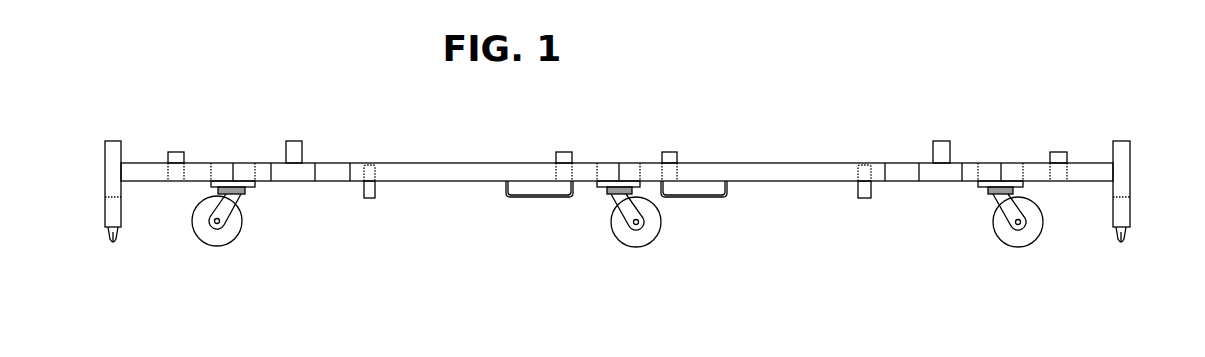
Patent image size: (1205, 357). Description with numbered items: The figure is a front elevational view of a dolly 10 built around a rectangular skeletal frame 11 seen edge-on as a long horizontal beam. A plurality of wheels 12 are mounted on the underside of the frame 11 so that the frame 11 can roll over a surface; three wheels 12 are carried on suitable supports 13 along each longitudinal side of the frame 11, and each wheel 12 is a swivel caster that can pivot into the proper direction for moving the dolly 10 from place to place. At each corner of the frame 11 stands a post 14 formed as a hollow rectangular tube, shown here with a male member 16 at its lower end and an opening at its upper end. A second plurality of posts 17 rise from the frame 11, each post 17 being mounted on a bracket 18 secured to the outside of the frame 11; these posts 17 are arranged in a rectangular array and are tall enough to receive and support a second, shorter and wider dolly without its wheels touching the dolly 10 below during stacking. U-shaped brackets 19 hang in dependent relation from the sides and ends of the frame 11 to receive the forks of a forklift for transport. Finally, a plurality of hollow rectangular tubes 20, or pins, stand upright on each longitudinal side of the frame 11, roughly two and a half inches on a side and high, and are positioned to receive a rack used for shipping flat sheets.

The dolly 10 is at (868, 112).
The rectangular skeletal frame 11 is at (833, 170).
The wheel 12 is at (230, 237).
The support 13 is at (990, 194).
The post 14 is at (108, 170).
The male member 16 is at (112, 244).
The post 17 is at (297, 148).
The bracket 18 is at (302, 173).
The U-shaped bracket 19 is at (523, 198).
The hollow tube 20 is at (176, 150).